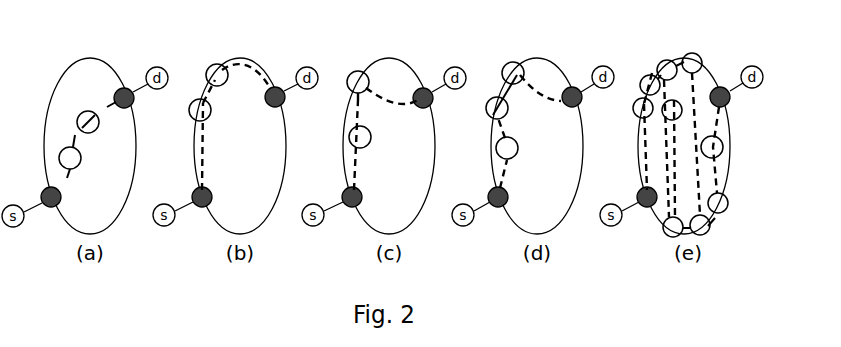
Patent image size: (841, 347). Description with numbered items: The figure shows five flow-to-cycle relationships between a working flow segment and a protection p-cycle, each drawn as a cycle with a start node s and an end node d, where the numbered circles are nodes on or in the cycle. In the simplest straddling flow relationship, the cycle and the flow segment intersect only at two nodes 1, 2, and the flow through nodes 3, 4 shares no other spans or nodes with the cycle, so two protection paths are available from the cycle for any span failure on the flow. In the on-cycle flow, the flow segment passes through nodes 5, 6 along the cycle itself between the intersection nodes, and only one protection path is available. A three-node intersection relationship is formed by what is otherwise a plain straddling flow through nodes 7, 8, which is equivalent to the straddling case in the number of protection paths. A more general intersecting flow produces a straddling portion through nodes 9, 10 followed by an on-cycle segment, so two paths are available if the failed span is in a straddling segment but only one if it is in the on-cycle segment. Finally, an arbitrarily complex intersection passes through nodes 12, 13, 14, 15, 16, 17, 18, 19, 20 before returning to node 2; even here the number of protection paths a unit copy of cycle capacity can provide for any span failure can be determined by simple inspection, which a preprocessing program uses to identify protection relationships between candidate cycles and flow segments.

The node 1 is at (342, 186).
The node 2 is at (427, 105).
The node 3 is at (71, 161).
The node 4 is at (96, 113).
The node 5 is at (204, 144).
The node 6 is at (236, 83).
The node 7 is at (365, 145).
The node 8 is at (382, 77).
The node 9 is at (513, 153).
The node 10 is at (509, 97).
The node 12 is at (637, 144).
The node 13 is at (643, 80).
The node 14 is at (660, 233).
The node 15 is at (677, 150).
The node 16 is at (670, 128).
The node 17 is at (704, 128).
The node 18 is at (703, 236).
The node 19 is at (731, 209).
The node 20 is at (725, 150).